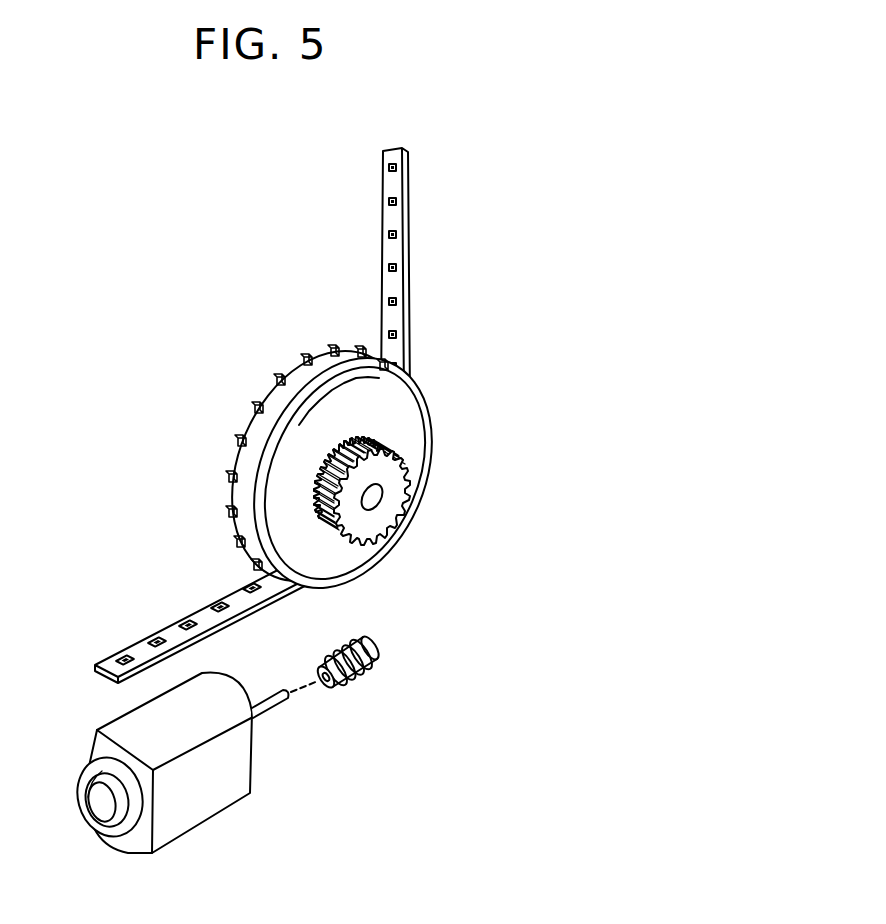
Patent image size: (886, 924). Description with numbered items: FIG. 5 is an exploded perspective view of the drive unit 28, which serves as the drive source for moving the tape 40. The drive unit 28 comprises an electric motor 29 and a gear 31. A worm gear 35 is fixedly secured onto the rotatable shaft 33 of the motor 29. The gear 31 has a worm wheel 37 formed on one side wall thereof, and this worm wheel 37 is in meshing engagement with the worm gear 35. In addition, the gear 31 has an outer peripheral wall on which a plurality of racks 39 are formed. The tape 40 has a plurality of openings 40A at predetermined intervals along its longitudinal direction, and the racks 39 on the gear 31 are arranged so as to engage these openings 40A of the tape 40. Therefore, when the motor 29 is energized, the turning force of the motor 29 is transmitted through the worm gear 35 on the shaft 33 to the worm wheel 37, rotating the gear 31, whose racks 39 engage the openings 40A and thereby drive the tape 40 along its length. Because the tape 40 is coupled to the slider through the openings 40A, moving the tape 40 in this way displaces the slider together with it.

The drive unit 28 is at (472, 565).
The electric motor 29 is at (203, 818).
The gear 31 is at (432, 418).
The rotatable shaft 33 is at (277, 716).
The worm gear 35 is at (368, 677).
The worm wheel 37 is at (404, 512).
The racks 39 is at (312, 356).
The tape 40 is at (408, 254).
The openings 40A is at (393, 310).